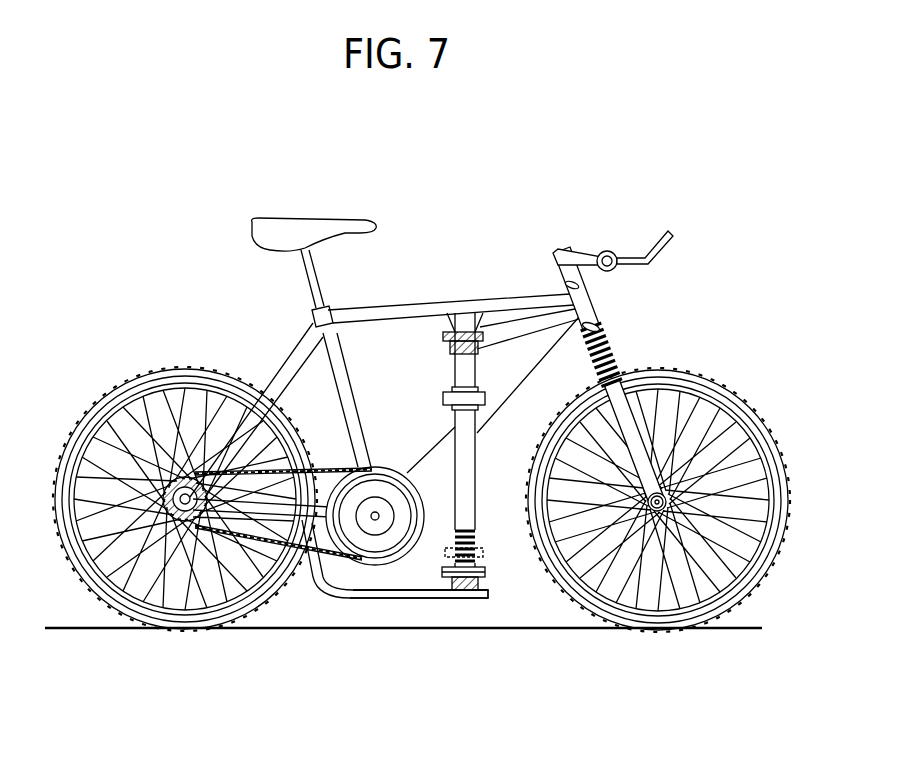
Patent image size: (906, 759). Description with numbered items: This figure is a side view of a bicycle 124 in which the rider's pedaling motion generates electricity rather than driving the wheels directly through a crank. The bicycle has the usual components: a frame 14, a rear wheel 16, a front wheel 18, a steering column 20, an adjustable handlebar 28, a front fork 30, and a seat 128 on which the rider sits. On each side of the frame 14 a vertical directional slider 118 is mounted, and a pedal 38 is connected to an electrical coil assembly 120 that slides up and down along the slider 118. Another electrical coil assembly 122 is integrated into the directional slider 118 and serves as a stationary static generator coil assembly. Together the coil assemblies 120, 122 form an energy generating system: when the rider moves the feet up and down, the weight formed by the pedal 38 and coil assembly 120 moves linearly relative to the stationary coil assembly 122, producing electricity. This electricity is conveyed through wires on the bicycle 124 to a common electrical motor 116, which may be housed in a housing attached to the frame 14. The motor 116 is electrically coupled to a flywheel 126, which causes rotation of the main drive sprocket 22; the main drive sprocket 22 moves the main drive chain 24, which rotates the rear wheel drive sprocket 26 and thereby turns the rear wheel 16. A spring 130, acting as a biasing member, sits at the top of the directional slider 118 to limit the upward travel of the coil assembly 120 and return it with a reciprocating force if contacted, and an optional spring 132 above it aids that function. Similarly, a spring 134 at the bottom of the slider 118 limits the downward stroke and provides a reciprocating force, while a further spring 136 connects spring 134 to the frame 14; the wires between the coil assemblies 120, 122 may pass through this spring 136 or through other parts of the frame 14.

The bicycle frame 14 is at (408, 307).
The rear wheel 16 is at (175, 365).
The front wheel 18 is at (748, 400).
The steering column 20 is at (483, 410).
The main drive sprocket 22 is at (353, 470).
The main drive chain 24 is at (320, 457).
The rear wheel drive sprocket 26 is at (157, 470).
The adjustable handlebar 28 is at (577, 253).
The front fork 30 is at (650, 505).
The pedal 38 is at (445, 397).
The electrical motor 116 is at (373, 518).
The directional slider 118 is at (620, 378).
The electrical coil assembly 120 is at (447, 407).
The stationary electrical coil assembly 122 is at (447, 572).
The bicycle 124 is at (246, 306).
The flywheel 126 is at (345, 537).
The seat 128 is at (302, 215).
The spring 130 is at (597, 327).
The optional spring 132 is at (577, 292).
The spring 134 is at (483, 592).
The spring 136 is at (405, 600).